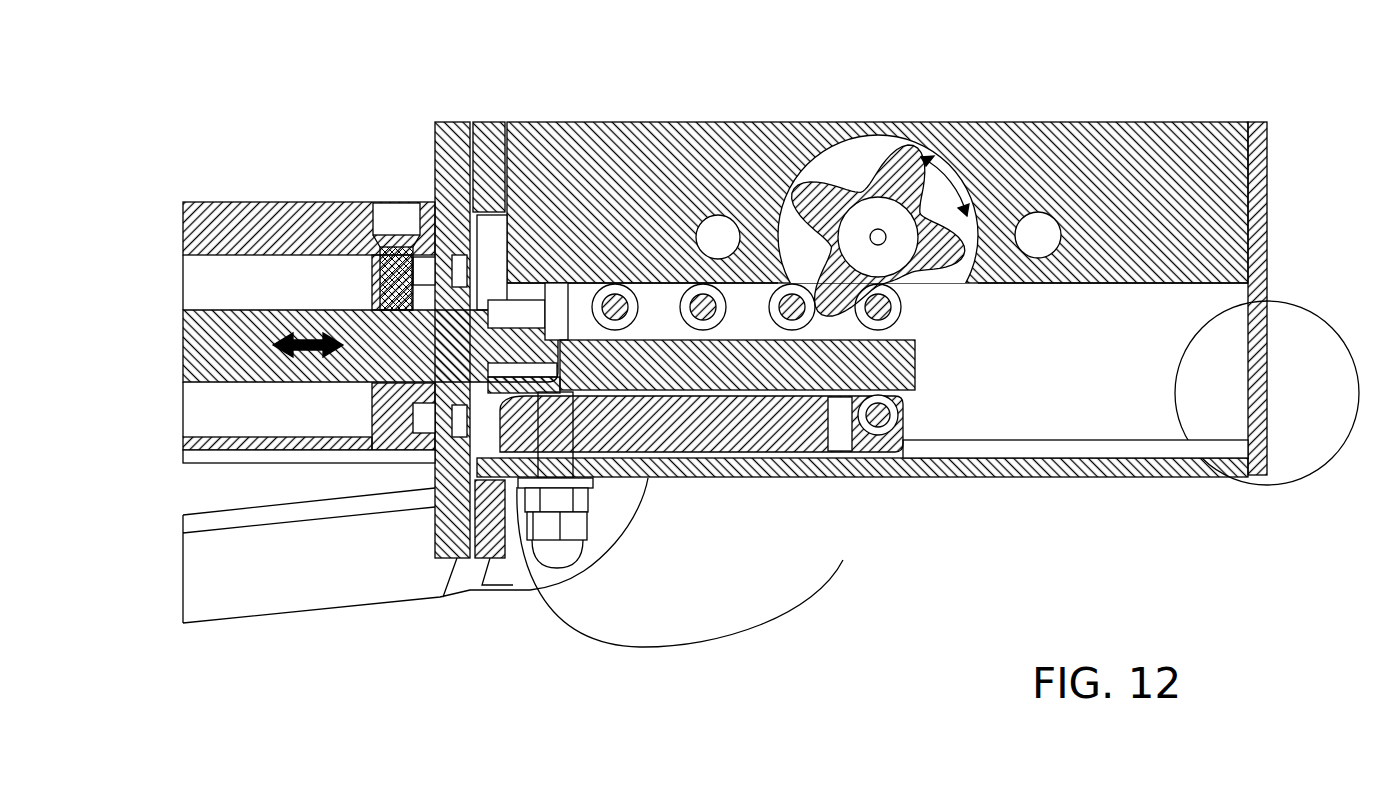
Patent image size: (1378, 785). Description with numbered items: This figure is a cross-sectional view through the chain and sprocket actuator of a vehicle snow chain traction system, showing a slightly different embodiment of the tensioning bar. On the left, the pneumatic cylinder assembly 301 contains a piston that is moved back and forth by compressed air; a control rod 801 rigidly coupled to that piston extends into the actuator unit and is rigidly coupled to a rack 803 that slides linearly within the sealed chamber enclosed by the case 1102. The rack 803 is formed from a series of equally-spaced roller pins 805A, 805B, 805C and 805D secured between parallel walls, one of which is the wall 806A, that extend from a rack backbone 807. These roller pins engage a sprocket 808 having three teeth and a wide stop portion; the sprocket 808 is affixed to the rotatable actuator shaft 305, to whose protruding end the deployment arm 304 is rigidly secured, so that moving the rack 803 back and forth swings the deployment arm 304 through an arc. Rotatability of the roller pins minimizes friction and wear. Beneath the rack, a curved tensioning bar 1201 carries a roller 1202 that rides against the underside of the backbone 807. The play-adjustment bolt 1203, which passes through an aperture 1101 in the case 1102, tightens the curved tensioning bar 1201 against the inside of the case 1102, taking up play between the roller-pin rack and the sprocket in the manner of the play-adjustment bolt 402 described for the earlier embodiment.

The pneumatic cylinder assembly 301 is at (250, 230).
The play-adjustment bolt 402 is at (387, 277).
The control rod 801 is at (220, 343).
The roller pin 805D is at (612, 284).
The roller pin 805C is at (700, 284).
The roller pin 805B is at (790, 284).
The roller pin 805A is at (905, 313).
The actuator shaft 305 is at (878, 237).
The sprocket 808 is at (903, 143).
The parallel wall 806A is at (773, 336).
The case 1102 is at (1213, 452).
The rack backbone 807 is at (920, 362).
The rack 803 is at (935, 340).
The roller 1202 is at (873, 432).
The curved tensioning bar 1201 is at (520, 393).
The play-adjustment bolt 1203 is at (585, 468).
The aperture 1101 is at (707, 430).
The deployment arm 304 is at (550, 527).